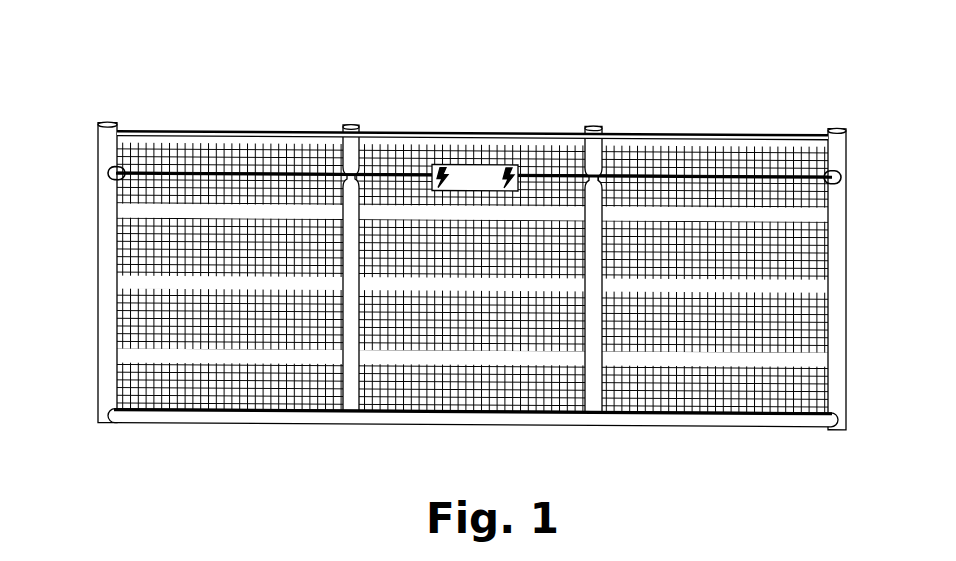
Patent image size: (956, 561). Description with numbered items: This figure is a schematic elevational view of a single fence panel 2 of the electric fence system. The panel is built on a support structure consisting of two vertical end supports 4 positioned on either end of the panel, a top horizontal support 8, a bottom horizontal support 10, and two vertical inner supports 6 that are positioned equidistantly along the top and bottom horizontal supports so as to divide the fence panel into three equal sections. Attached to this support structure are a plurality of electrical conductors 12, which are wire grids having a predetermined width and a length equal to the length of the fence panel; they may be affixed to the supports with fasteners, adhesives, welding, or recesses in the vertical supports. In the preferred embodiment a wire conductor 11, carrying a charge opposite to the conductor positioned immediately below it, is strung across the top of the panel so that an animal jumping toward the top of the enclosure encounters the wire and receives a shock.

The fence panel 2 is at (472, 332).
The vertical end supports 4 is at (472, 276).
The vertical inner supports 6 is at (472, 272).
The top horizontal support 8 is at (474, 175).
The bottom horizontal support 10 is at (473, 418).
The wire conductor 11 is at (472, 135).
The electrical conductors 12 is at (471, 280).